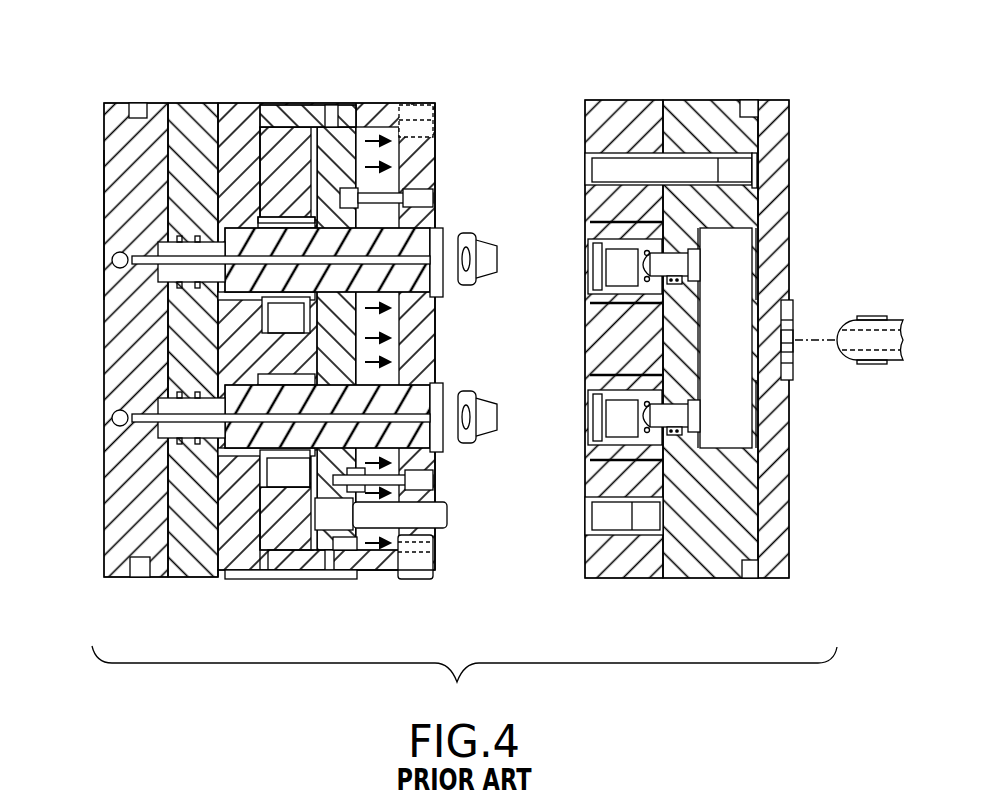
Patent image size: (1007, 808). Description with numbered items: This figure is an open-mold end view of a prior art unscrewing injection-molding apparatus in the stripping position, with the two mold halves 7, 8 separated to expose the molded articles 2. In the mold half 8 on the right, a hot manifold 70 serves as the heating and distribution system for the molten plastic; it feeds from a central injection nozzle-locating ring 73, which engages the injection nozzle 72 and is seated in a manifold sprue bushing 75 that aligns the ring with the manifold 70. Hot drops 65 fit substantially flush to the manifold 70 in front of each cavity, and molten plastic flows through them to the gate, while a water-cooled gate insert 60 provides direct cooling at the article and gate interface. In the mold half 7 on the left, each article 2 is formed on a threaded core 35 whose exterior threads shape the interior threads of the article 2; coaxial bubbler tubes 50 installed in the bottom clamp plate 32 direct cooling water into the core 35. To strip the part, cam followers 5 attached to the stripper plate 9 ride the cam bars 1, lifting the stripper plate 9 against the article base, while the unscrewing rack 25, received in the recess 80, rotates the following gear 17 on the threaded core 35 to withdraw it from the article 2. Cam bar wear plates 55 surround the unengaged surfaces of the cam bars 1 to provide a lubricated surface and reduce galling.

The cam bar 1 is at (297, 110).
The article 2 is at (498, 260).
The cam follower 5 is at (377, 103).
The mold half 7 is at (157, 103).
The mold half 8 is at (625, 100).
The stripper plate 9 is at (418, 355).
The following gear 17 is at (262, 383).
The unscrewing rack 25 is at (262, 322).
The bottom clamp plate 32 is at (118, 210).
The threaded core 35 is at (218, 230).
The coaxial bubbler tube 50 is at (255, 217).
The cam bar wear plate 55 is at (233, 582).
The water-cooled gate insert 60 is at (663, 438).
The hot drop 65 is at (680, 415).
The hot manifold 70 is at (745, 397).
The injection nozzle 72 is at (873, 320).
The injection nozzle-locating ring 73 is at (787, 350).
The manifold sprue bushing 75 is at (785, 330).
The recess 80 is at (375, 318).